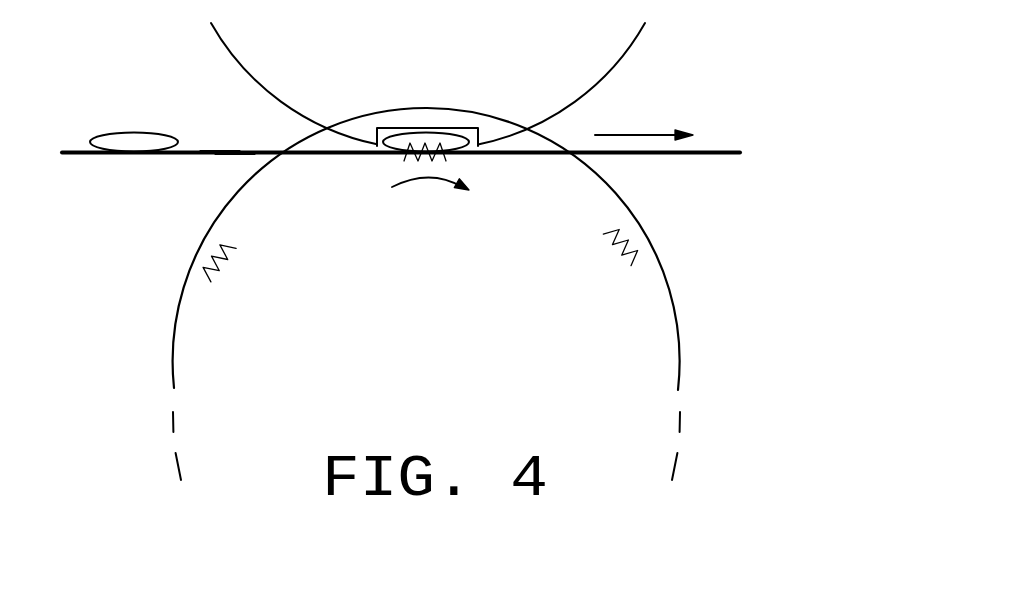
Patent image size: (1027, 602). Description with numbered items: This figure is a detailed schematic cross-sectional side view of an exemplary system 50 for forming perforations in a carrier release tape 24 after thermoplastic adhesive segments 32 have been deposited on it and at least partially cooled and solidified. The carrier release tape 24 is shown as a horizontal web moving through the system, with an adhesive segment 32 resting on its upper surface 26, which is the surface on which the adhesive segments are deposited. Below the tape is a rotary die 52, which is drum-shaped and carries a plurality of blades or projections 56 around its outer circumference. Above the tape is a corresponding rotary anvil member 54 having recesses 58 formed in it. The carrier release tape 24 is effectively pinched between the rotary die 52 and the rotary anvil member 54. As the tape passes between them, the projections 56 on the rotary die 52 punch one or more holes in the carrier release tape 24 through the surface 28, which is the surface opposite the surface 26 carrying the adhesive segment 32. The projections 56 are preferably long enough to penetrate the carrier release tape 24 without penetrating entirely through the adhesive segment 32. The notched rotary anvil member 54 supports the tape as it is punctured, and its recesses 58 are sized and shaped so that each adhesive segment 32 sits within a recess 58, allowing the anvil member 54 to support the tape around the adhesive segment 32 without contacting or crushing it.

The carrier release tape 24 is at (78, 153).
The surface 26 is at (219, 149).
The surface 28 is at (235, 158).
The adhesive segment 32 is at (135, 132).
The system for forming perforations 50 is at (733, 241).
The rotary die 52 is at (667, 333).
The rotary anvil member 54 is at (575, 100).
The projections 56 is at (630, 237).
The recesses 58 is at (410, 128).